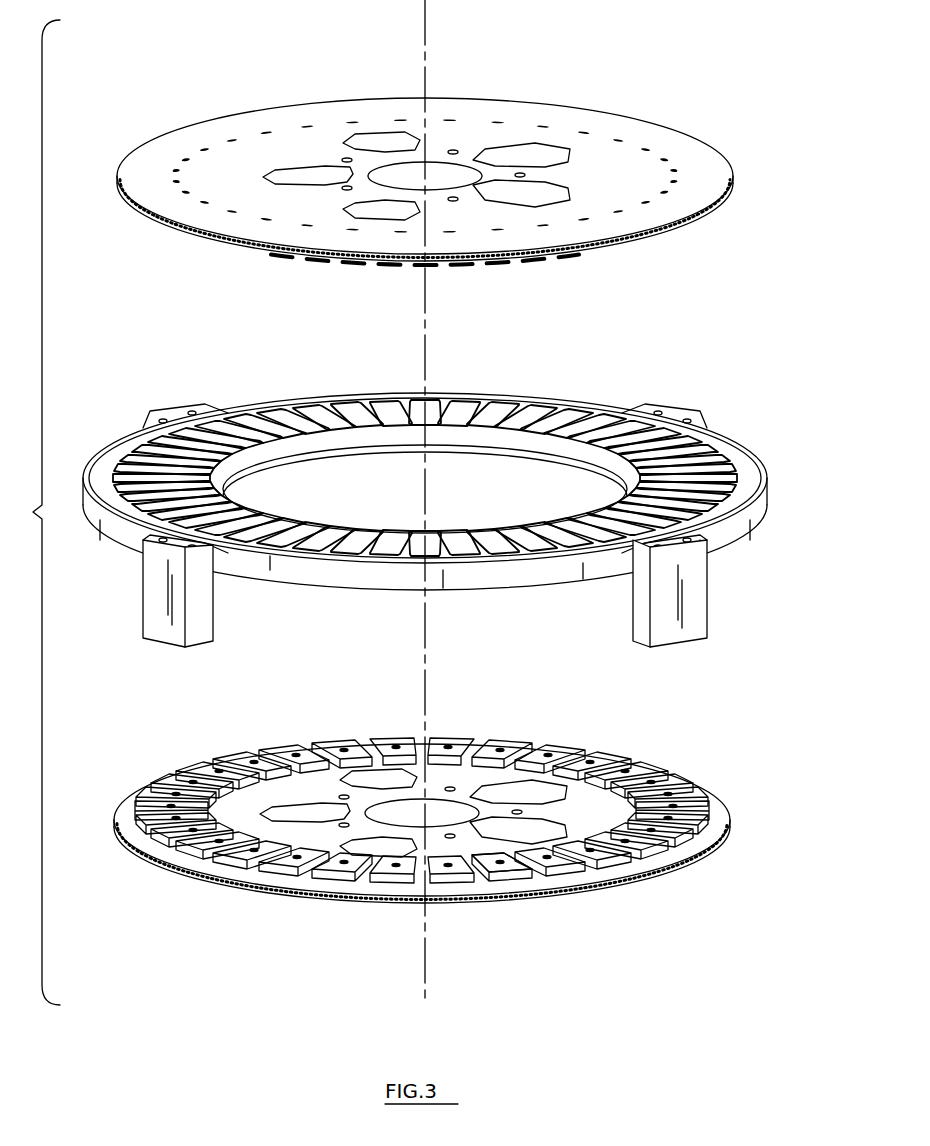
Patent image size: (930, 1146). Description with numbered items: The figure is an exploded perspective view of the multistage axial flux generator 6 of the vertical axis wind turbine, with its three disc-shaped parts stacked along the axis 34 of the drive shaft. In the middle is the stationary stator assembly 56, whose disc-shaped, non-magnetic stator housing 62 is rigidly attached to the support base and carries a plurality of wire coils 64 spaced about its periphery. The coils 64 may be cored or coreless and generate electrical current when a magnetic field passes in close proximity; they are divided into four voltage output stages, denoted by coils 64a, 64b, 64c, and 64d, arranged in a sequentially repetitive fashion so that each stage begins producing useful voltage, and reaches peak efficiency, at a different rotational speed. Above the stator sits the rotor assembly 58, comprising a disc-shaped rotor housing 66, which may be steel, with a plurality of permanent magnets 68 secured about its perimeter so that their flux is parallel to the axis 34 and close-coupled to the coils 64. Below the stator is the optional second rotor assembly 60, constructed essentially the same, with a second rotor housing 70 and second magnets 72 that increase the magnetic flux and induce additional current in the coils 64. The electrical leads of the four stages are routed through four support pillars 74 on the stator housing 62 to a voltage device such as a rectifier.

The multistage axial flux generator 6 is at (35, 512).
The axis of the drive shaft 34 is at (427, 28).
The stator assembly 56 is at (438, 492).
The rotor assembly 58 is at (697, 88).
The second rotor assembly 60 is at (445, 823).
The stator housing 62 is at (718, 537).
The wire coils 64 is at (313, 553).
The first-stage coils 64a is at (447, 403).
The second-stage coils 64b is at (417, 400).
The third-stage coils 64c is at (385, 403).
The fourth-stage coils 64d is at (340, 403).
The rotor housing 66 is at (655, 213).
The permanent magnets 68 is at (457, 270).
The second rotor housing 70 is at (597, 816).
The second magnets 72 is at (541, 868).
The support pillars 74 is at (150, 420).